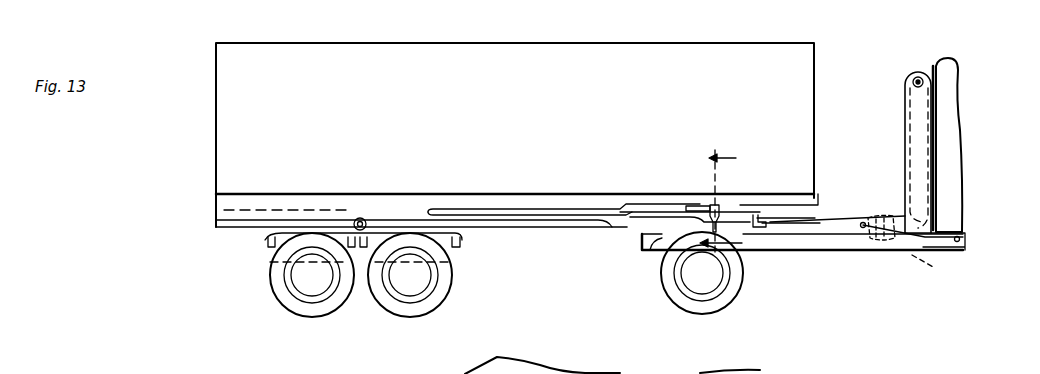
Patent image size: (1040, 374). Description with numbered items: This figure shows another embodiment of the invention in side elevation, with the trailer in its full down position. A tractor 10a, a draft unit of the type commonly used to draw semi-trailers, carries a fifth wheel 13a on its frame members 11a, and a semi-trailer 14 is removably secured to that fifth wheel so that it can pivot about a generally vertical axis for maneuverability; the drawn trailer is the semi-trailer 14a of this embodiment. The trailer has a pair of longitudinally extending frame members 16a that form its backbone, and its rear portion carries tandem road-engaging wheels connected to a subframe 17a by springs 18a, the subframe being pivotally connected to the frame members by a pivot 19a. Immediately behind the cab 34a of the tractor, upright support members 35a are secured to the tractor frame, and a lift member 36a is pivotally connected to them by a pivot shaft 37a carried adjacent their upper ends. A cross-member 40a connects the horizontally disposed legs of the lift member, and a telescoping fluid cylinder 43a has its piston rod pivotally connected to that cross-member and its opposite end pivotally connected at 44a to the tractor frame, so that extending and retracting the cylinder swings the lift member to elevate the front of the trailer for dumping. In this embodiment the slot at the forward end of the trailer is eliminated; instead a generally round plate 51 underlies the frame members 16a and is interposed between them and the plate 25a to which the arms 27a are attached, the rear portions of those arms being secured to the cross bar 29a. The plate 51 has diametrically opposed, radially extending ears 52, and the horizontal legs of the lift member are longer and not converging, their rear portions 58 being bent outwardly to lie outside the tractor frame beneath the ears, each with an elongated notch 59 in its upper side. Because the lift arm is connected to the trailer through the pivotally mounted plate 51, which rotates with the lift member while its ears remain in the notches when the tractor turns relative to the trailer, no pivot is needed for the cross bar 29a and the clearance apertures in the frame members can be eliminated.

The tractor 10a is at (904, 254).
The frame members 11a is at (820, 249).
The fifth wheel 13a is at (618, 235).
The semi-trailer 14 is at (732, 203).
The semi-trailer 14a is at (555, 225).
The frame members 16a is at (545, 267).
The subframe 17a is at (266, 238).
The springs 18a is at (302, 266).
The pivot 19a is at (218, 207).
The plate 25a is at (757, 214).
The arms 27a is at (528, 248).
The cross bar 29a is at (432, 212).
The cab 34a is at (947, 62).
The upright support members 35a is at (906, 130).
The lift member 36a is at (869, 215).
The pivot shaft 37a is at (918, 77).
The cross-member 40a is at (862, 230).
The fluid cylinder 43a is at (936, 272).
The pivotal connection 44a is at (965, 249).
The plate 51 is at (694, 206).
The ears 52 is at (714, 205).
The rear portions 58 is at (662, 246).
The notch 59 is at (752, 212).